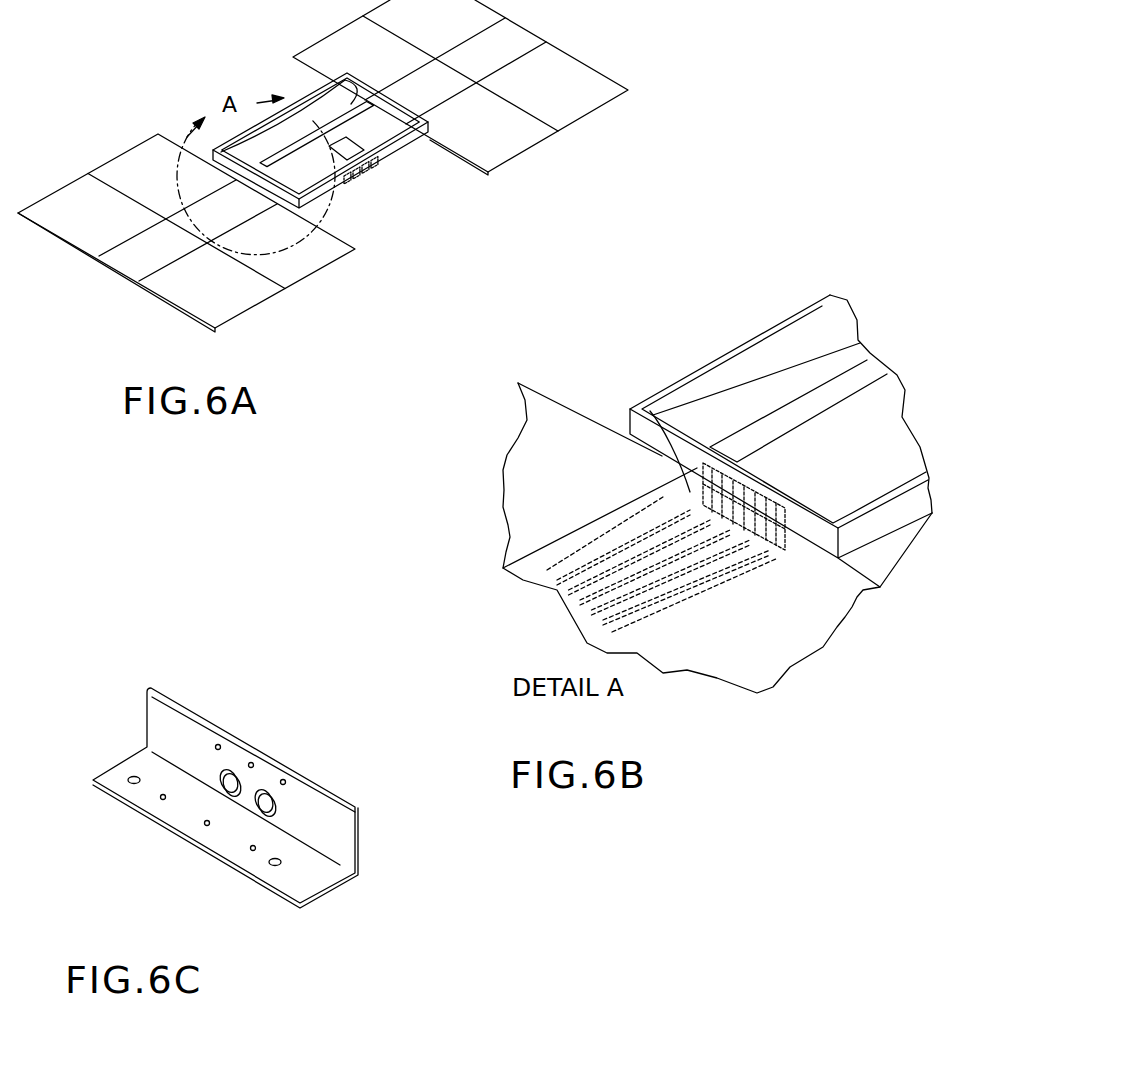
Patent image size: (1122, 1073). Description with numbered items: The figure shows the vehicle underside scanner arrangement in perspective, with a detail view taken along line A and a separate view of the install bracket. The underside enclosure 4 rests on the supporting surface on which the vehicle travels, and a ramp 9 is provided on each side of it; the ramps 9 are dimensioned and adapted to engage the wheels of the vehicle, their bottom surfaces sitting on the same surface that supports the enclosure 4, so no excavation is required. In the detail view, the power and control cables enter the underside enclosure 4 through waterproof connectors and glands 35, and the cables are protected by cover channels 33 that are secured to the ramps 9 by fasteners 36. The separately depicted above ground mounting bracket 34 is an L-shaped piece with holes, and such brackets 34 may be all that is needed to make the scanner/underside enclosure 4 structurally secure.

In FIG. 6B, the underside enclosure 4 is at (692, 387).
In FIG. 6B, the ramp 9 is at (573, 438).
In FIG. 6B, the cover channel 33 is at (558, 584).
In FIG. 6C, the above ground mounting bracket 34 is at (187, 813).
In FIG. 6B, the waterproof connectors and glands 35 is at (743, 495).
In FIG. 6B, the fastener 36 is at (682, 497).